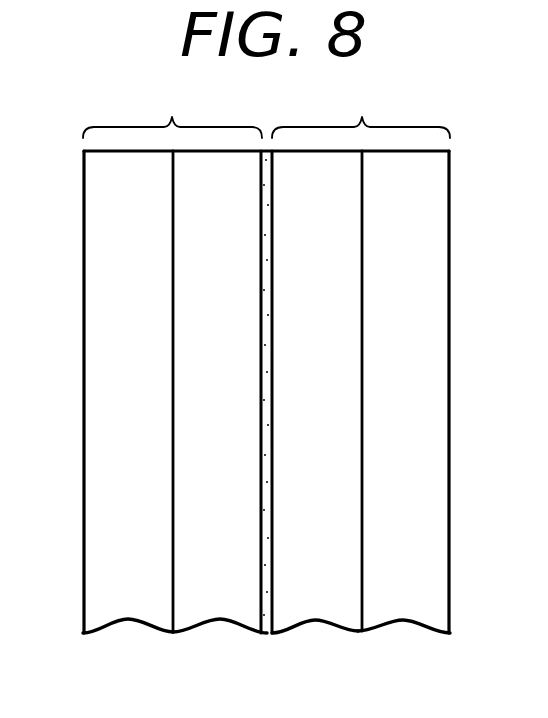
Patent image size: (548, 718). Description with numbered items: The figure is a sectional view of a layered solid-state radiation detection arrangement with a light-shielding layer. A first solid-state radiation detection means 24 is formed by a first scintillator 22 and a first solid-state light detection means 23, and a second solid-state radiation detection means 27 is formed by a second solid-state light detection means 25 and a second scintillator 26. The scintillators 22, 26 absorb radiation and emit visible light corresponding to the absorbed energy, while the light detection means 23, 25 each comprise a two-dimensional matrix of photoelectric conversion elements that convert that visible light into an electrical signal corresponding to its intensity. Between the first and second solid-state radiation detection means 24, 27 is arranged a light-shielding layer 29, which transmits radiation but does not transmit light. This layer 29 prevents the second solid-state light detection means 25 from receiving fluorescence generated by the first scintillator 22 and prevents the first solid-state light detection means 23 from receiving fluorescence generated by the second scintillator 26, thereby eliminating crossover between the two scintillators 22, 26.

The first scintillator 22 is at (128, 610).
The first solid-state light detection means 23 is at (219, 610).
The first solid-state radiation detection means 24 is at (172, 110).
The second solid-state light detection means 25 is at (314, 610).
The second scintillator 26 is at (402, 610).
The second solid-state radiation detection means 27 is at (361, 110).
The light-shielding layer 29 is at (262, 622).